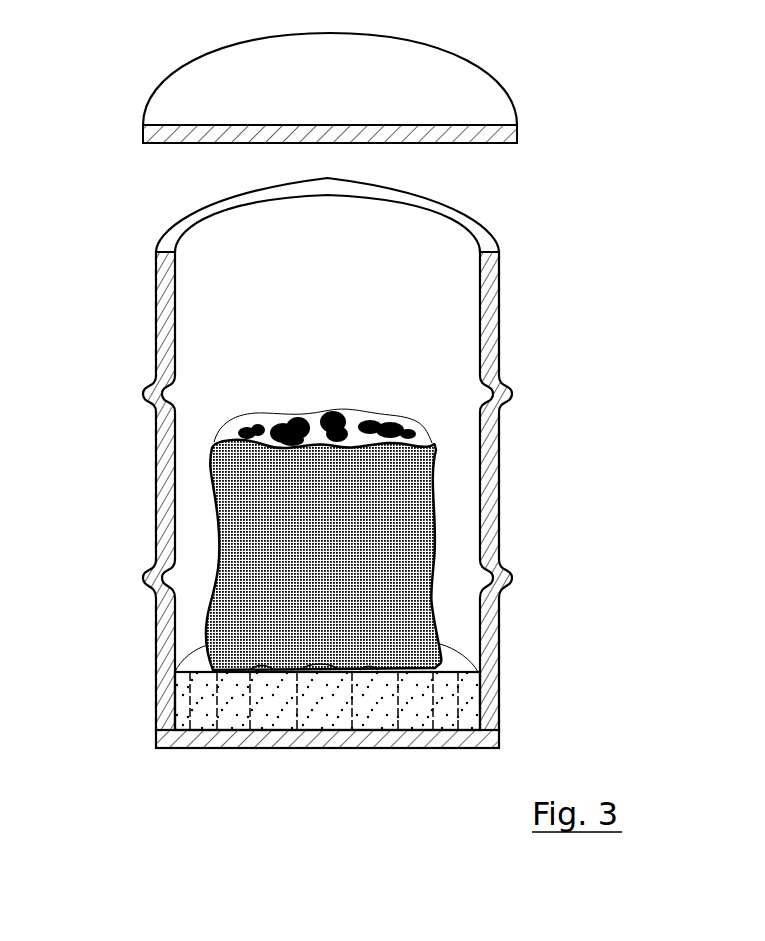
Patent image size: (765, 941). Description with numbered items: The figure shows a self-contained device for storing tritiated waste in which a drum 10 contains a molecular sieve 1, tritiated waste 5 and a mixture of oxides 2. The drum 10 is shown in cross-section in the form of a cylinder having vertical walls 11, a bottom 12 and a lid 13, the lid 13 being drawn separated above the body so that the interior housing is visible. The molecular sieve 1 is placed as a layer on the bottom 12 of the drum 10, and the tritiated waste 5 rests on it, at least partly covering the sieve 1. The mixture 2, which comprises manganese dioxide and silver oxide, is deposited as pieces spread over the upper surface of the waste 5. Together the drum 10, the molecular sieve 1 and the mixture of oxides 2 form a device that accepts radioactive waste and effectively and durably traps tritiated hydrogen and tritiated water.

The molecular sieve 1 is at (467, 698).
The mixture of manganese dioxide and silver oxide 2 is at (303, 417).
The tritiated waste 5 is at (392, 596).
The drum 10 is at (321, 508).
The vertical walls 11 is at (495, 441).
The bottom 12 is at (307, 742).
The lid 13 is at (492, 133).